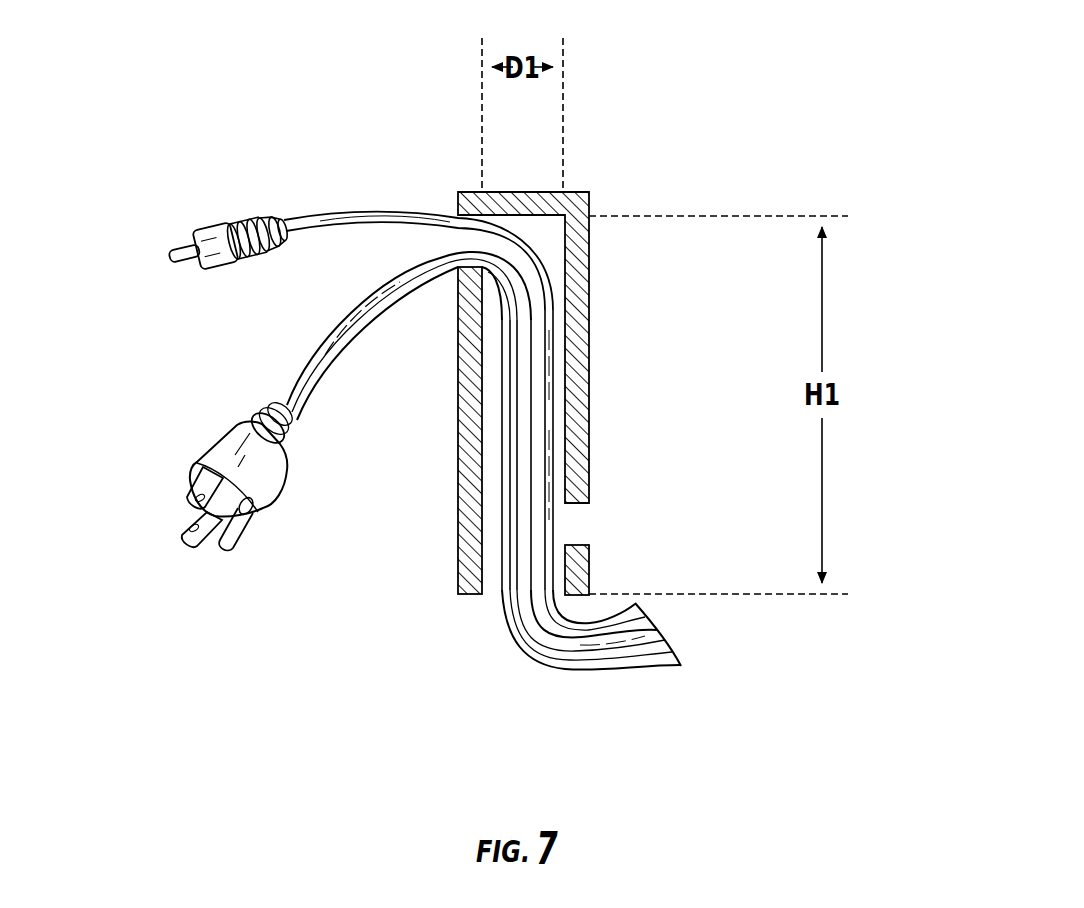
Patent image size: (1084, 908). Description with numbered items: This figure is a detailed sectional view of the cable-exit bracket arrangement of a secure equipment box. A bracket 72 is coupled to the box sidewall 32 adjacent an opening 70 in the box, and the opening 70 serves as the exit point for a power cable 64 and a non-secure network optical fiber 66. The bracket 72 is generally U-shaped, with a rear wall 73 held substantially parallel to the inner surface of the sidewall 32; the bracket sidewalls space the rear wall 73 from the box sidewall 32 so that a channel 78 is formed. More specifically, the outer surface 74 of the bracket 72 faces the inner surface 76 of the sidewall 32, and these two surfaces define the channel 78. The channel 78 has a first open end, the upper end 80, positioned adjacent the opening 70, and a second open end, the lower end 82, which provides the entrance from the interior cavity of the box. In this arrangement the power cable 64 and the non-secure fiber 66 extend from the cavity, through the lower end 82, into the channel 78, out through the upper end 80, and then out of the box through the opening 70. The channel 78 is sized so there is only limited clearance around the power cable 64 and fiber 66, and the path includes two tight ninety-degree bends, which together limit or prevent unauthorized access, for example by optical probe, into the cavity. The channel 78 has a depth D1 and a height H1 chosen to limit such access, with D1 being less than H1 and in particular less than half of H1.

The sidewall 32 is at (467, 543).
The power cable 64 is at (292, 391).
The non-secure network optical fiber 66 is at (313, 221).
The opening 70 is at (448, 197).
The bracket 72 is at (589, 312).
The rear wall 73 is at (589, 397).
The outer surface 74 is at (552, 427).
The inner surface 76 is at (492, 400).
The channel 78 is at (493, 556).
The upper end 80 is at (560, 239).
The lower end 82 is at (561, 600).